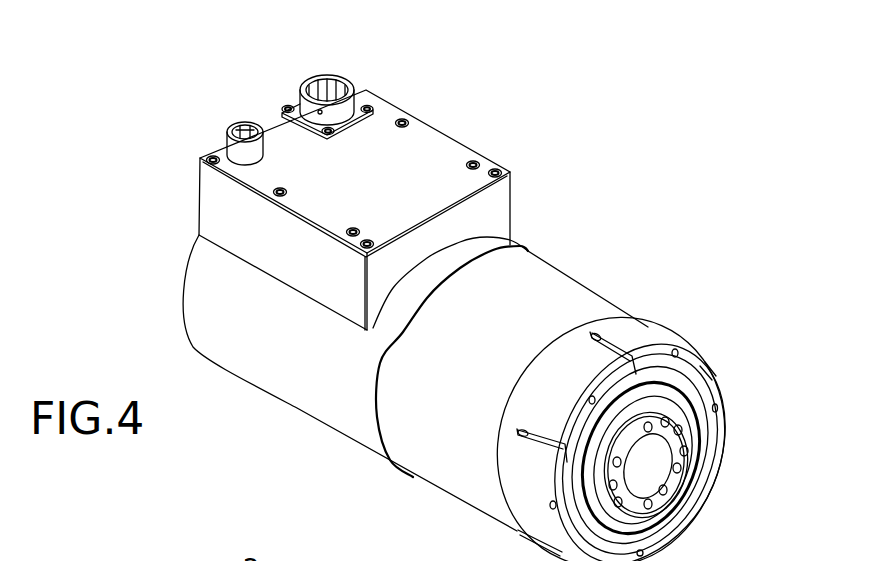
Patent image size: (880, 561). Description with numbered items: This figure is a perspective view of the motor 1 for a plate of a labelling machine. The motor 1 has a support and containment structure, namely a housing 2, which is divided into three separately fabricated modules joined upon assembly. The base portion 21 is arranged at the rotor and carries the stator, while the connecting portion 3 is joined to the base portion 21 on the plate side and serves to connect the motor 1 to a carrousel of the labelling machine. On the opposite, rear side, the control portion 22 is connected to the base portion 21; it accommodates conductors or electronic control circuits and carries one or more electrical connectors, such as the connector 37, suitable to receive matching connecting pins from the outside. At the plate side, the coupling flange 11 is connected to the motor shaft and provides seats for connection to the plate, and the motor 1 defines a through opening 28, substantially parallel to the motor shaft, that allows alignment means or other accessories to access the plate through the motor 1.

The motor 1 is at (546, 216).
The housing 2 is at (433, 455).
The connecting portion 3 is at (637, 338).
The coupling flange 11 is at (683, 450).
The base portion 21 is at (575, 300).
The control portion 22 is at (308, 398).
The through opening 28 is at (642, 465).
The connector 37 is at (345, 75).